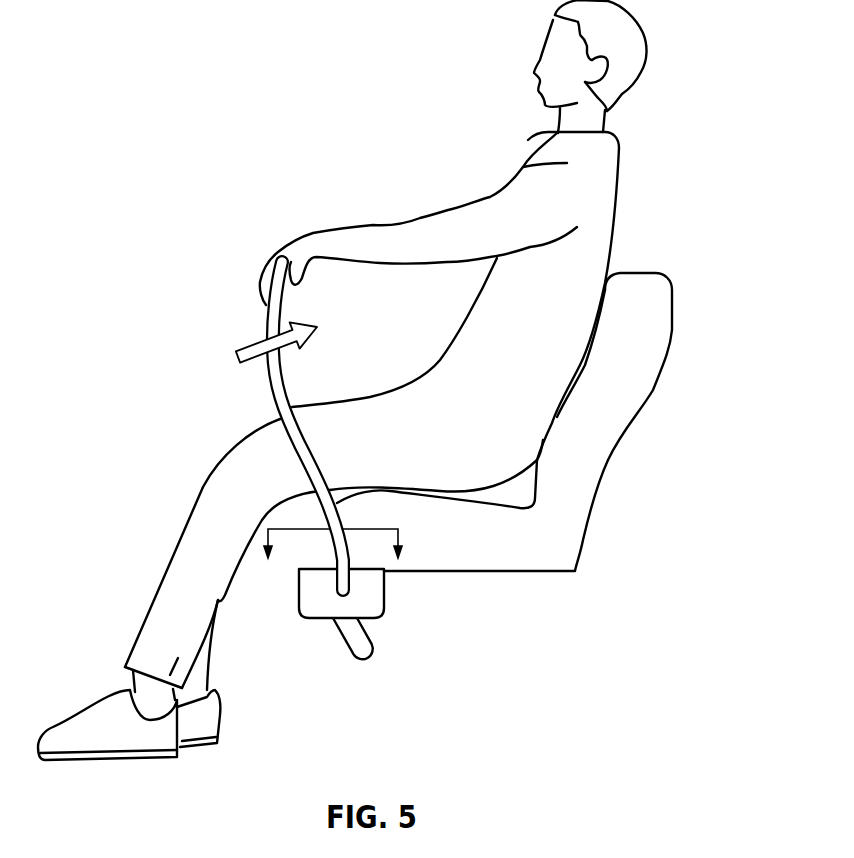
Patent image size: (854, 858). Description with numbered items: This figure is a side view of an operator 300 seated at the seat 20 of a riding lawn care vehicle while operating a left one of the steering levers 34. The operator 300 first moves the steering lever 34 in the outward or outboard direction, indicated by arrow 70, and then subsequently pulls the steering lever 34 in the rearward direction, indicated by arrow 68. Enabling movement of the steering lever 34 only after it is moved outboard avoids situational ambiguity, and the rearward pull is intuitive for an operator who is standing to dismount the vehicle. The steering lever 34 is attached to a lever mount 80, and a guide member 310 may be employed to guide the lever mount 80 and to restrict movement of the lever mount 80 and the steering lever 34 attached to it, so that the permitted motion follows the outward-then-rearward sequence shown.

The seat 20 is at (633, 382).
The steering lever 34 is at (268, 307).
The arrow indicating rearward direction 68 is at (245, 353).
The arrow indicating outward direction 70 is at (294, 531).
The lever mount 80 is at (347, 580).
The operator 300 is at (541, 152).
The guide member 310 is at (315, 611).